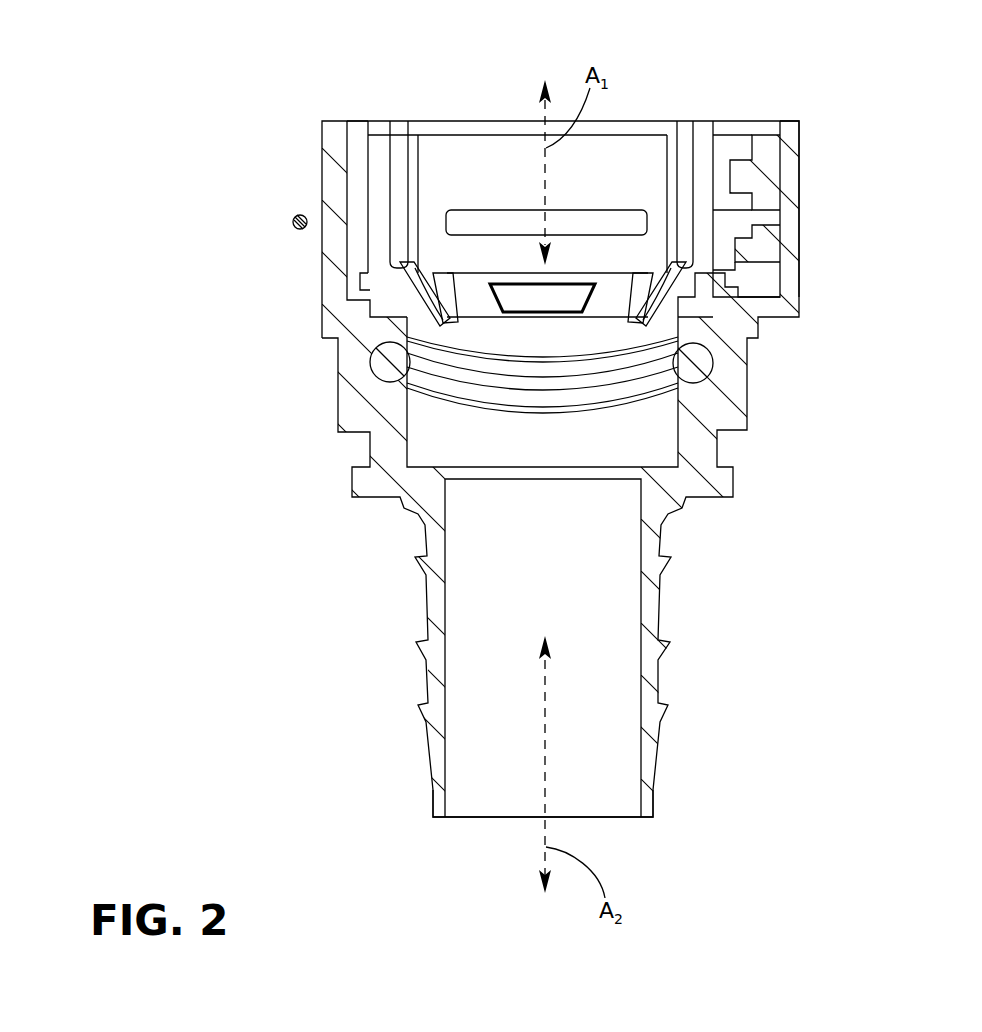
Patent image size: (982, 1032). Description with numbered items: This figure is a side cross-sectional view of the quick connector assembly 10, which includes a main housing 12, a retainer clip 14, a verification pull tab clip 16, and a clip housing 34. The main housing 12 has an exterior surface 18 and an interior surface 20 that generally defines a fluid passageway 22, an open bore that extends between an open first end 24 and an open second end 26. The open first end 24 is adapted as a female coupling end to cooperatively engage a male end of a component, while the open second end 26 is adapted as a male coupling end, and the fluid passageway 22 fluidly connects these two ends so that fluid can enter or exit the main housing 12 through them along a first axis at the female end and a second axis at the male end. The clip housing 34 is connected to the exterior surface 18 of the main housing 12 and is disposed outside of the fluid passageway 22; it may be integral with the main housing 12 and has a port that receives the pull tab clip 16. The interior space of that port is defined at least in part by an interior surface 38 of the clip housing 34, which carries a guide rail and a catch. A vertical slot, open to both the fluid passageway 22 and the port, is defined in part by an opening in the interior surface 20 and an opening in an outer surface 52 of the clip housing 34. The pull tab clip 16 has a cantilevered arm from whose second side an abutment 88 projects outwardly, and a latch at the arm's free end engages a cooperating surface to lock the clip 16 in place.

The quick connector assembly 10 is at (855, 97).
The main housing 12 is at (318, 283).
The retainer clip 14 is at (293, 222).
The verification pull tab clip 16 is at (782, 208).
The exterior surface 18 is at (322, 127).
The interior surface 20 is at (347, 177).
The fluid passageway 22 is at (423, 469).
The open first end 24 is at (357, 128).
The open second end 26 is at (472, 818).
The clip housing 34 is at (806, 160).
The interior surface of the clip housing 38 is at (767, 293).
The outer surface of the clip housing 52 is at (787, 120).
The abutment 88 is at (740, 240).